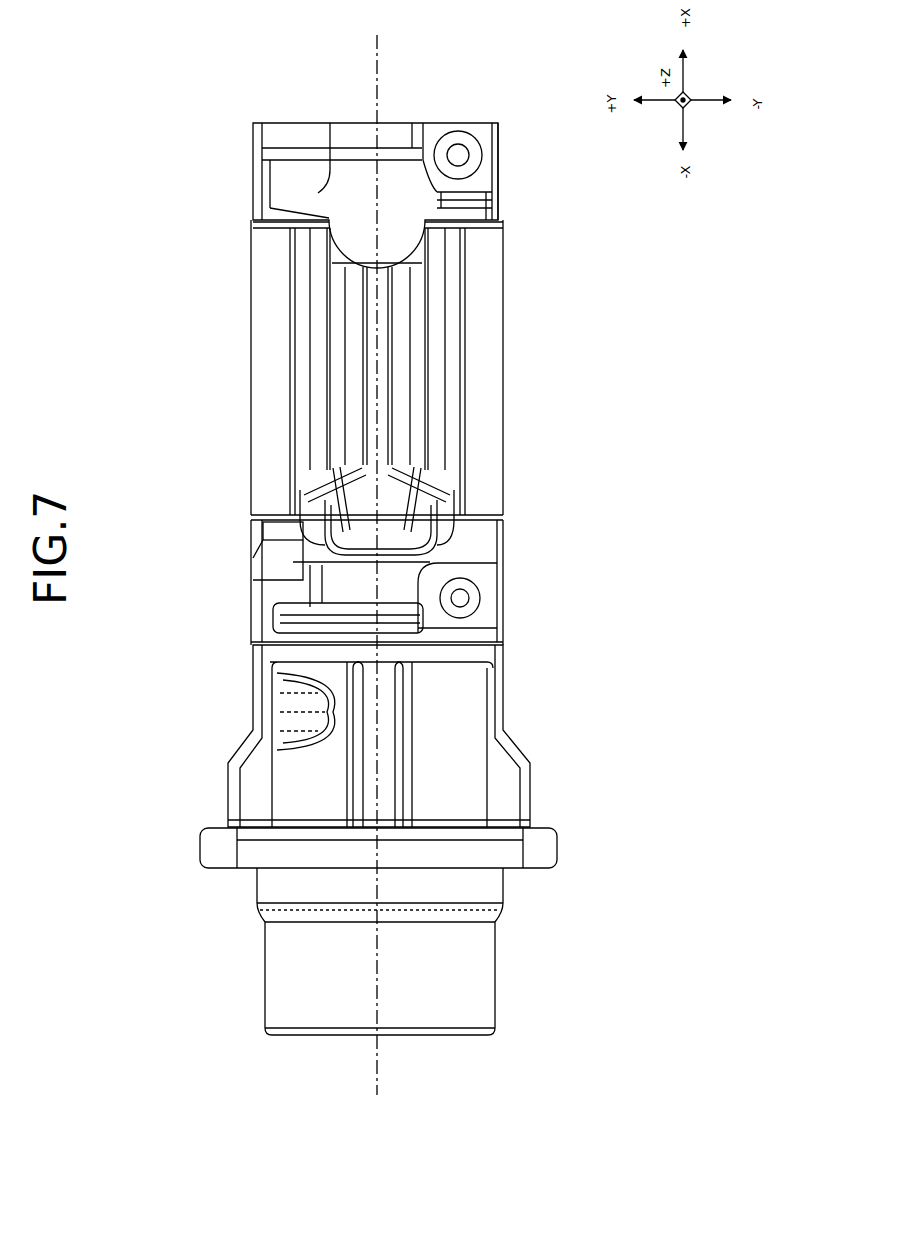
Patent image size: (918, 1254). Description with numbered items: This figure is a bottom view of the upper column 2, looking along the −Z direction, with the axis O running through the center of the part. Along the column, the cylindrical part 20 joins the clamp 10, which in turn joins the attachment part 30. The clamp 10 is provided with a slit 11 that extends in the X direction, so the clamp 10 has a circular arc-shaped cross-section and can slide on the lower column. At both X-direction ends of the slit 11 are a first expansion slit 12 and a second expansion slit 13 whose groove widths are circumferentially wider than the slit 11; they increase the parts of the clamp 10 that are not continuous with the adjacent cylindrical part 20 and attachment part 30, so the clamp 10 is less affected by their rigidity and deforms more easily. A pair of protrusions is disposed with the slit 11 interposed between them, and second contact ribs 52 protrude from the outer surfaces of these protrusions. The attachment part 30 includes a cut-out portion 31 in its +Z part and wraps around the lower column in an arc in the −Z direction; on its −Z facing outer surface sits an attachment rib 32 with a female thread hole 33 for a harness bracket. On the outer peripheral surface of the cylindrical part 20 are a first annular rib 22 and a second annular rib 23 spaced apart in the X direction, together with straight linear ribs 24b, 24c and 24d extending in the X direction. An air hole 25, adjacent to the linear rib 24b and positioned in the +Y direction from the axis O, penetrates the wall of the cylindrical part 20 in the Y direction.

The upper column 2 is at (155, 65).
The clamp 10 is at (207, 358).
The slit 11 is at (385, 388).
The first expansion slit 12 is at (403, 532).
The second expansion slit 13 is at (403, 205).
The cylindrical part 20 is at (175, 768).
The first annular rib 22 is at (210, 852).
The second annular rib 23 is at (255, 623).
The linear rib 24b is at (255, 683).
The linear rib 24c is at (390, 750).
The linear rib 24d is at (503, 702).
The air hole 25 is at (277, 715).
The attachment part 30 is at (205, 150).
The cut-out portion 31 is at (327, 123).
The attachment rib 32 is at (498, 132).
The female thread hole 33 is at (452, 140).
The second contact rib 52 is at (265, 490).
The axis O is at (383, 1048).